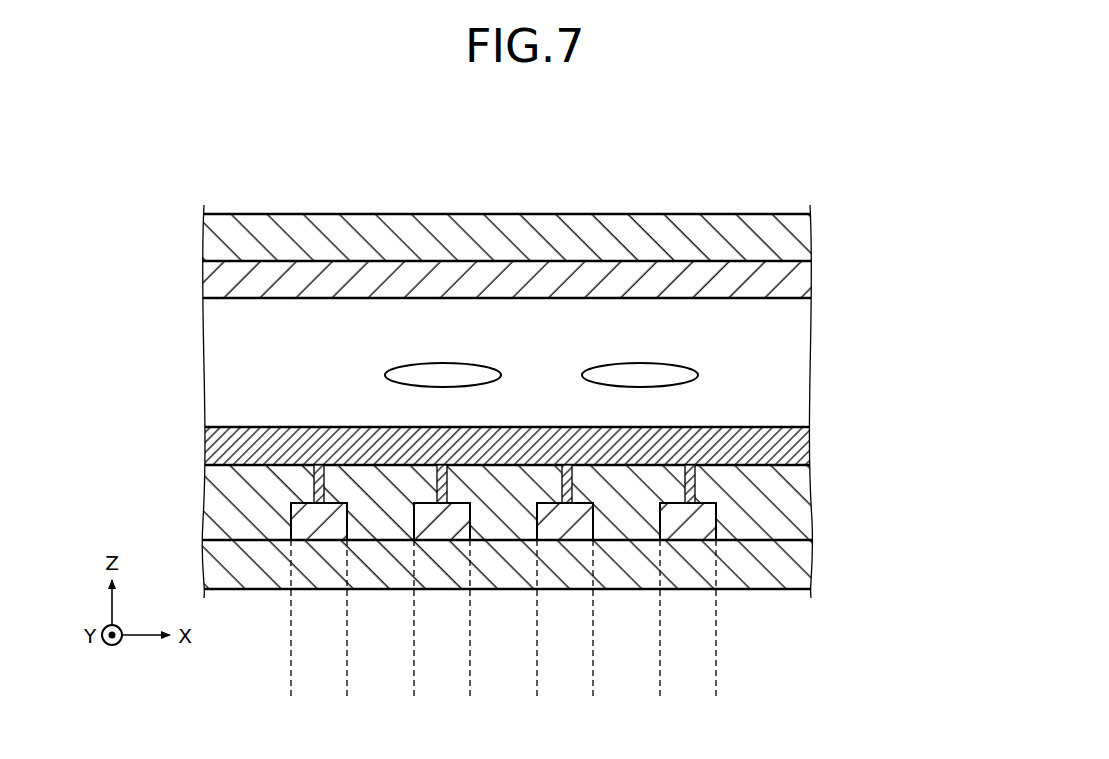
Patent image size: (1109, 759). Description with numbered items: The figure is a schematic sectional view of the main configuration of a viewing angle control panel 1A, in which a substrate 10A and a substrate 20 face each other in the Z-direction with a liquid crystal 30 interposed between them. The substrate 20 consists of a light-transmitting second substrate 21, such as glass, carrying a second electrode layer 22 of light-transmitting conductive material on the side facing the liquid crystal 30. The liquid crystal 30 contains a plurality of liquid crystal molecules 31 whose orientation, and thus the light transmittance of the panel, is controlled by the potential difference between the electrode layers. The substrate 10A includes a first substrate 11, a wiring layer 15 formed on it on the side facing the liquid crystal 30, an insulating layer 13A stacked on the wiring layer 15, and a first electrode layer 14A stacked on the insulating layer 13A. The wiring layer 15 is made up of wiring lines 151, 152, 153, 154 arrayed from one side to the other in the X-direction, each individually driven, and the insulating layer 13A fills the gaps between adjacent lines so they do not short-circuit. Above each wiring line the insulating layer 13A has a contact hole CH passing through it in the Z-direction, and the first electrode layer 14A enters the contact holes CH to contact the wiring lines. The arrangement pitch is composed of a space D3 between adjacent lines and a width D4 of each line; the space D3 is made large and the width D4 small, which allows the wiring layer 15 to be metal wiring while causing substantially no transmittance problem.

The viewing angle control panel 1A is at (842, 190).
The substrate 20 is at (574, 256).
The second substrate 21 is at (787, 233).
The second electrode layer 22 is at (792, 281).
The liquid crystal 30 is at (578, 362).
The liquid crystal molecules 31 is at (682, 370).
The substrate 10A is at (581, 498).
The first electrode layer 14A is at (795, 450).
The insulating layer 13A is at (792, 486).
The wiring layer 15 is at (588, 572).
The wiring line 151 is at (320, 528).
The wiring line 152 is at (446, 528).
The wiring line 153 is at (569, 528).
The wiring line 154 is at (692, 528).
The first substrate 11 is at (540, 564).
The contact hole CH is at (442, 461).
The space D3 is at (412, 666).
The width D4 is at (293, 687).